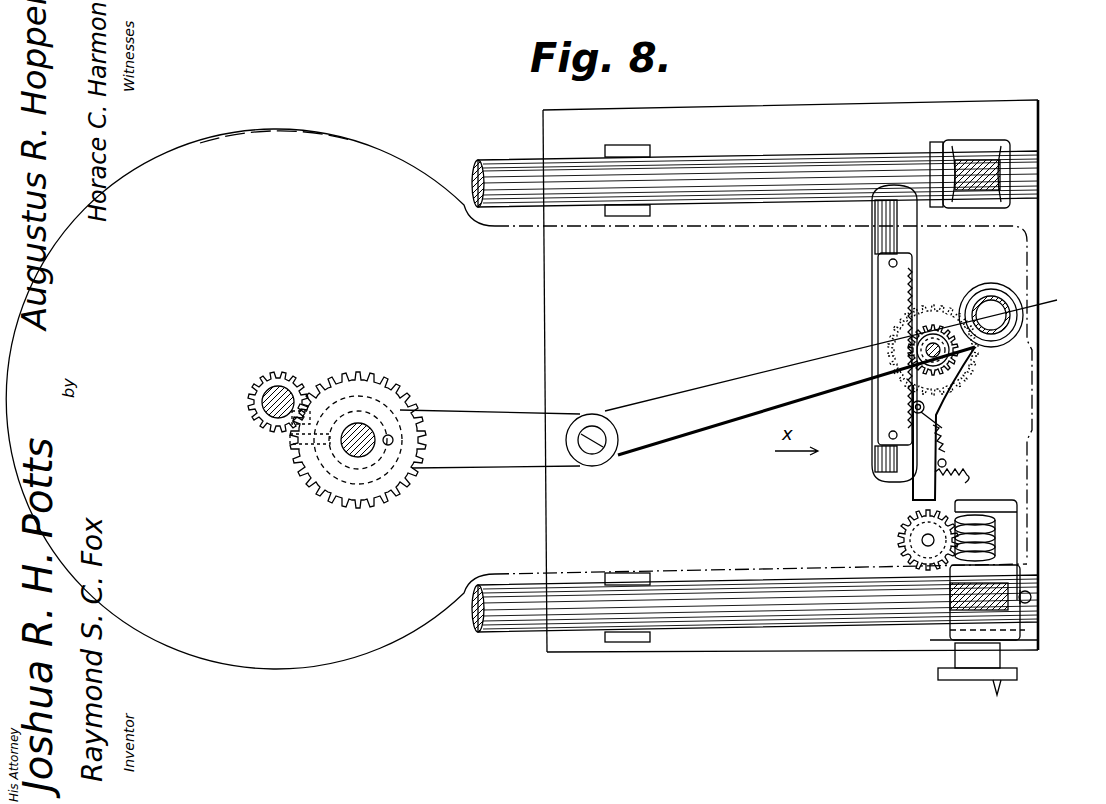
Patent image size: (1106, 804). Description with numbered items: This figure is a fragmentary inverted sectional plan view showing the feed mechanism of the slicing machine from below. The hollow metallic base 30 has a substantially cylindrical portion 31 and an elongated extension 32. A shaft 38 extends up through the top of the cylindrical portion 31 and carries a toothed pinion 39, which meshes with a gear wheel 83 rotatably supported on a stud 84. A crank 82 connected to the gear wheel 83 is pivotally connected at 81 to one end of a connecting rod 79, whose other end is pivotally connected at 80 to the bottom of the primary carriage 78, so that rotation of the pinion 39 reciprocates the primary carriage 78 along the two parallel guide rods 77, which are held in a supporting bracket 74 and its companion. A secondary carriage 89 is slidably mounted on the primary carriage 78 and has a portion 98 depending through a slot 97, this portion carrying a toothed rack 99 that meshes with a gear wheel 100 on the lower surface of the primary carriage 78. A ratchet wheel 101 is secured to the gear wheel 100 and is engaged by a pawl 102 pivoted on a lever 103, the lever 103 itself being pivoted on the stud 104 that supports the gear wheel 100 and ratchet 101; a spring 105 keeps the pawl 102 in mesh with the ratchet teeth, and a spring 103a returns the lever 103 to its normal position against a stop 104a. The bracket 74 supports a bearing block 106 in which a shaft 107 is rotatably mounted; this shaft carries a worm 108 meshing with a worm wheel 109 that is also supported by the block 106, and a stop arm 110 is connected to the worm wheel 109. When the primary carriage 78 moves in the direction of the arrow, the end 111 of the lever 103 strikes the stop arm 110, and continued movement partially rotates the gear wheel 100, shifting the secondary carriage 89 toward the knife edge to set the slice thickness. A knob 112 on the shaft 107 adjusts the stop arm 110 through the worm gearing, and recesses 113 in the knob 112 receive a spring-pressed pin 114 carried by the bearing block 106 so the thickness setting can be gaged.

The hollow metallic base 30 is at (413, 166).
The cylindrical portion 31 is at (271, 131).
The elongated extension 32 is at (785, 224).
The shaft 38 is at (262, 420).
The toothed pinion 39 is at (276, 381).
The supporting bracket 74 is at (956, 170).
The guide rods 77 is at (727, 160).
The primary carriage 78 is at (544, 301).
The connecting rod 79 is at (795, 398).
The pivotal connection 80 is at (842, 353).
The pivotal connection 81 is at (595, 427).
The crank 82 is at (470, 412).
The gear wheel 83 is at (355, 380).
The stud 84 is at (352, 450).
The secondary carriage 89 is at (905, 238).
The slot 97 is at (873, 240).
The depending portion 98 is at (879, 273).
The toothed rack 99 is at (911, 278).
The gear wheel 100 is at (970, 297).
The ratchet wheel 101 is at (978, 364).
The pawl 102 is at (912, 407).
The lever 103 is at (945, 412).
The spring 103a is at (962, 482).
The stud 104 is at (955, 382).
The stop 104a is at (947, 463).
The spring 105 is at (956, 443).
The bearing block 106 is at (1020, 524).
The shaft 107 is at (1025, 630).
The worm 108 is at (998, 548).
The worm wheel 109 is at (900, 548).
The stop arm 110 is at (922, 504).
The end of lever 111 is at (915, 493).
The knob 112 is at (975, 680).
The recesses 113 is at (999, 684).
The spring-pressed pin 114 is at (1012, 665).